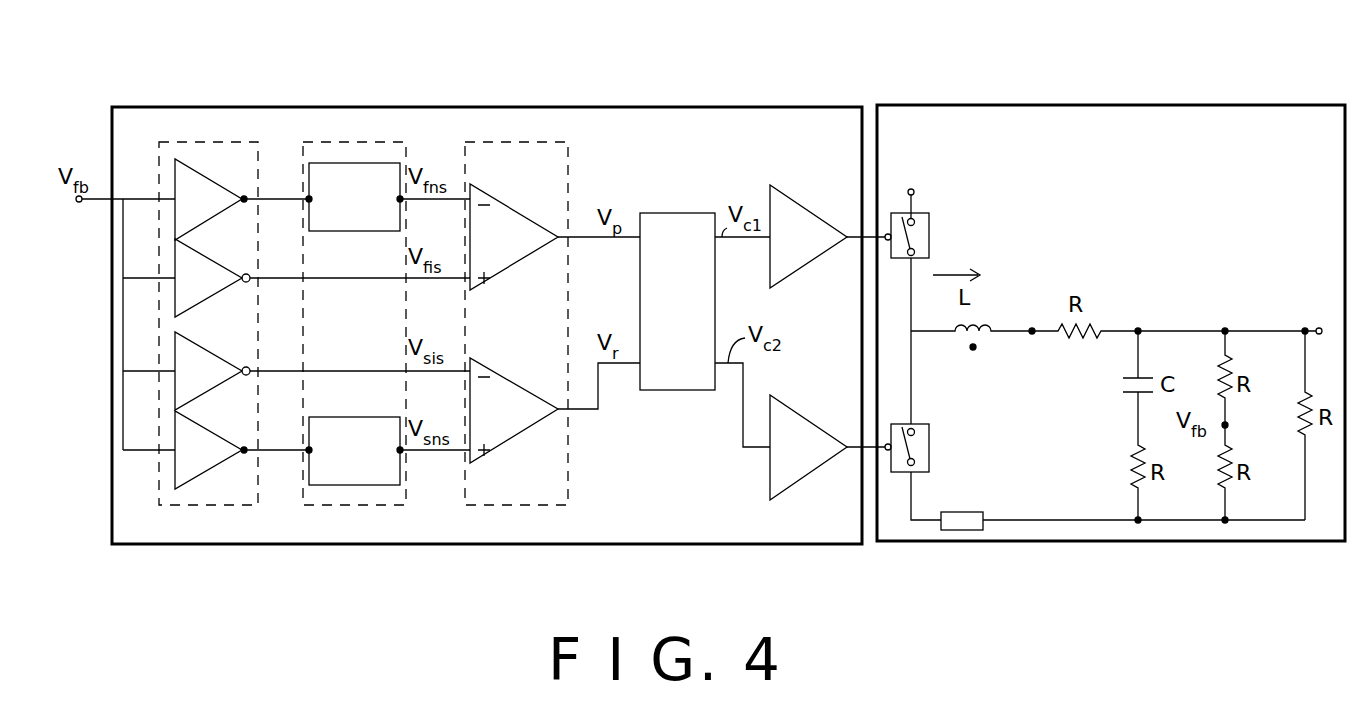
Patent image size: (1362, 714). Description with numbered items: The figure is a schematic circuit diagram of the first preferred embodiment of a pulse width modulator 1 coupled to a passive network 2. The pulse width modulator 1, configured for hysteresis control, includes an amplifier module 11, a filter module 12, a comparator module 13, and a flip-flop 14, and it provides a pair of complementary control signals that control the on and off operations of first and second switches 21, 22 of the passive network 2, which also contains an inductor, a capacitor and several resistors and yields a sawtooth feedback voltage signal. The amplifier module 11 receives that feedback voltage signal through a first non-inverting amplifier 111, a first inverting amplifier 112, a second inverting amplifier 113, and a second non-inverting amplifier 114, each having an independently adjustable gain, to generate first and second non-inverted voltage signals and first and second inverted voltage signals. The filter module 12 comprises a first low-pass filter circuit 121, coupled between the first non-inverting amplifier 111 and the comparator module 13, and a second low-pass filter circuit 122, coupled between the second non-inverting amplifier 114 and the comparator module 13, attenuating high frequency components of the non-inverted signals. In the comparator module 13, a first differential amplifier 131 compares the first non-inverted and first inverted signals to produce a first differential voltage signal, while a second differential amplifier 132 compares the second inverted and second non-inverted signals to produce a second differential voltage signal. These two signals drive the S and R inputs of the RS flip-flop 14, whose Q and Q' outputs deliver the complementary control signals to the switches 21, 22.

The pulse width modulator 1 is at (793, 113).
The passive network 2 is at (1126, 113).
The amplifier module 11 is at (256, 143).
The filter module 12 is at (369, 143).
The comparator module 13 is at (522, 143).
The flip-flop 14 is at (675, 222).
The first switch 21 is at (925, 242).
The second switch 22 is at (925, 462).
The first non-inverting amplifier 111 is at (198, 190).
The first inverting amplifier 112 is at (177, 297).
The second inverting amplifier 113 is at (188, 390).
The second non-inverting amplifier 114 is at (213, 458).
The first low-pass filter circuit 121 is at (323, 228).
The second low-pass filter circuit 122 is at (320, 425).
The first differential amplifier 131 is at (532, 228).
The second differential amplifier 132 is at (510, 430).